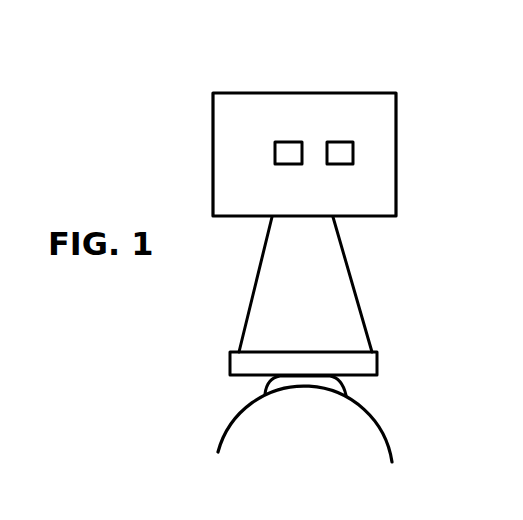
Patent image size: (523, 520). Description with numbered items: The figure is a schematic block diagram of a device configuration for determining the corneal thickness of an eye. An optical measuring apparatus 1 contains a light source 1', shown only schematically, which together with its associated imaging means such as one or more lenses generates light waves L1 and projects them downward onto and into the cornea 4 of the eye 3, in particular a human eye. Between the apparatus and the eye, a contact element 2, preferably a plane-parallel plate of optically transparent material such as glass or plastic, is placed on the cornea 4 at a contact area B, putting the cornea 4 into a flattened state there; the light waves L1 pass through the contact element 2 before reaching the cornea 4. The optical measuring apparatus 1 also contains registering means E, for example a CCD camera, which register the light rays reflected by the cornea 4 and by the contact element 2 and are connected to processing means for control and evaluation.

The optical measuring apparatus 1 is at (270, 152).
The light source 1' is at (307, 95).
The registering means E is at (347, 150).
The light waves L1 is at (315, 303).
The contact element 2 is at (243, 362).
The cornea 4 is at (265, 392).
The eye 3 is at (222, 438).
The contact area B is at (303, 392).